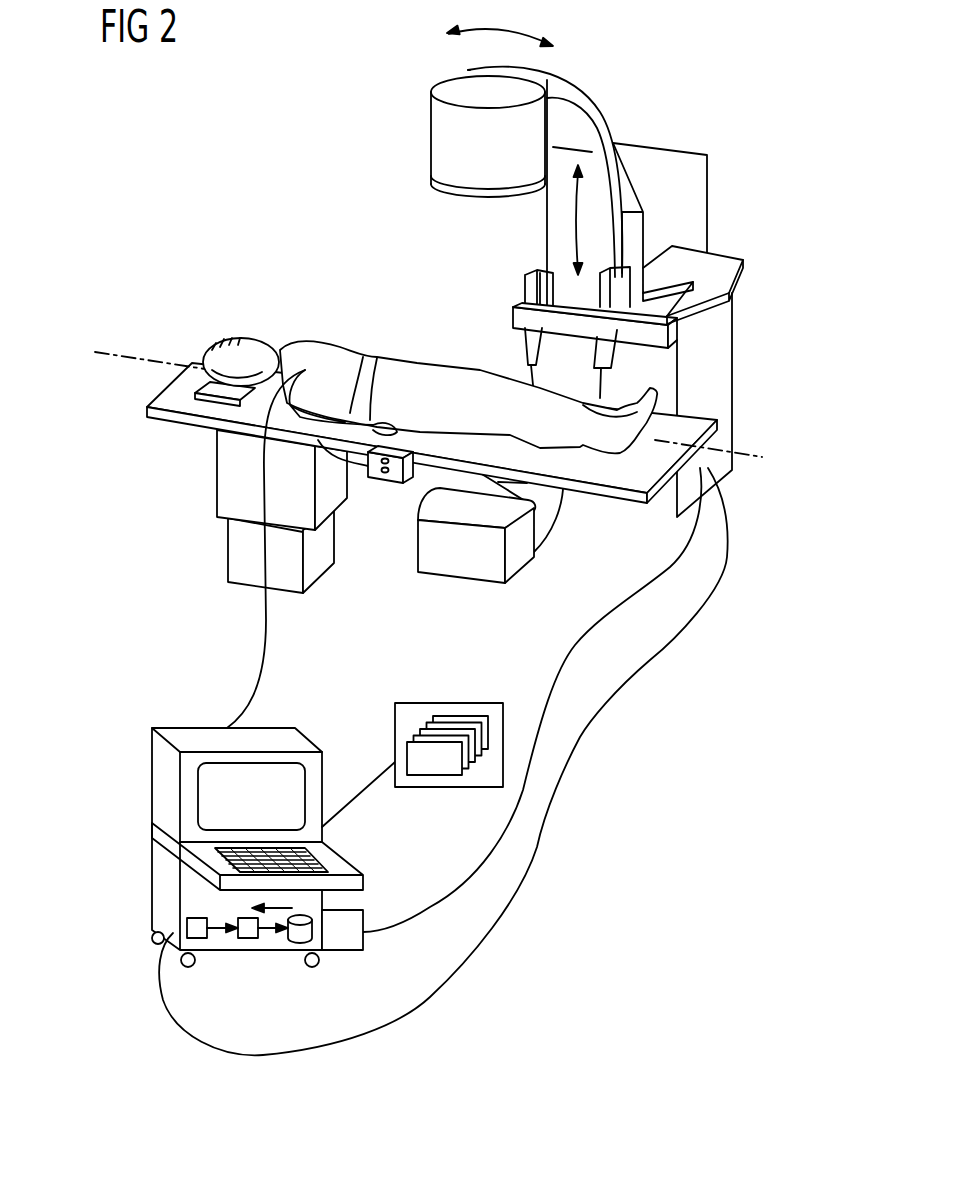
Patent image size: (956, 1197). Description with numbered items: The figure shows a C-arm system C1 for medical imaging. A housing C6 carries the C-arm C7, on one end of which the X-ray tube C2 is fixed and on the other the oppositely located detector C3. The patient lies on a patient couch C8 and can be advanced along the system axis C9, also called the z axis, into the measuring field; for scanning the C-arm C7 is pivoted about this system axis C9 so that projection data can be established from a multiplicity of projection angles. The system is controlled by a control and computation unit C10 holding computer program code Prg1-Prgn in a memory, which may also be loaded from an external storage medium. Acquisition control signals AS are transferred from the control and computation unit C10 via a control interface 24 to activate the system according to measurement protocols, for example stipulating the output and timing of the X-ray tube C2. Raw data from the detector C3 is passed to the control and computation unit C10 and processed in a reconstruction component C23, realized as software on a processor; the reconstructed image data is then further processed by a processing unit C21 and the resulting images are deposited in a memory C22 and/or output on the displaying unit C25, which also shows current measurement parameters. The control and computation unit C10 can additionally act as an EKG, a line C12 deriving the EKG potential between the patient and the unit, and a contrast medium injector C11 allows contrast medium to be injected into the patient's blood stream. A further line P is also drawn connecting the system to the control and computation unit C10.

The C-arm system C1 is at (248, 228).
The X-ray tube C2 is at (438, 136).
The detector C3 is at (518, 558).
The housing C6 is at (700, 183).
The C-arm C7 is at (593, 113).
The patient couch C8 is at (160, 417).
The system axis C9 is at (137, 356).
The control and computation unit C10 is at (162, 873).
The contrast medium injector C11 is at (373, 477).
The line C12 is at (262, 640).
The processing unit C21 is at (248, 940).
The memory C22 is at (299, 940).
The reconstruction component C23 is at (198, 940).
The displaying unit C25 is at (277, 733).
The control interface 24 is at (342, 950).
The acquisition control signals AS is at (564, 654).
The supply line P is at (587, 728).
The computer program code Prg1-Prgn is at (433, 778).